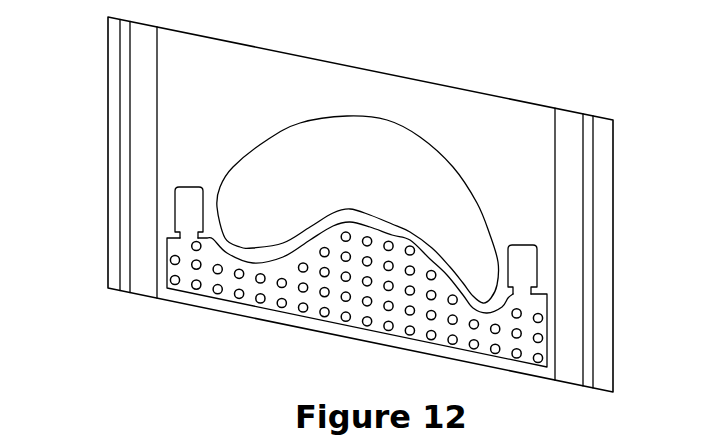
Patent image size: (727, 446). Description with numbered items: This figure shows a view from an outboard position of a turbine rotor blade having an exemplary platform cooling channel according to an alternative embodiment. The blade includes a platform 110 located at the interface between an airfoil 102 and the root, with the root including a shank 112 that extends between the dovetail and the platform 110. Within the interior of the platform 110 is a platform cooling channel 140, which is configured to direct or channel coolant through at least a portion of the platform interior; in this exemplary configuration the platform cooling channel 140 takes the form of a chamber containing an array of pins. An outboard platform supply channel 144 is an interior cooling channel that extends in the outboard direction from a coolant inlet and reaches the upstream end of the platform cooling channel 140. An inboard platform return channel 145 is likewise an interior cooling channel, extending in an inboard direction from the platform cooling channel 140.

The airfoil 102 is at (380, 183).
The platform 110 is at (233, 100).
The shank 112 is at (120, 113).
The platform cooling channel 140 is at (337, 312).
The outboard platform supply channel 144 is at (187, 208).
The inboard platform return channel 145 is at (523, 265).